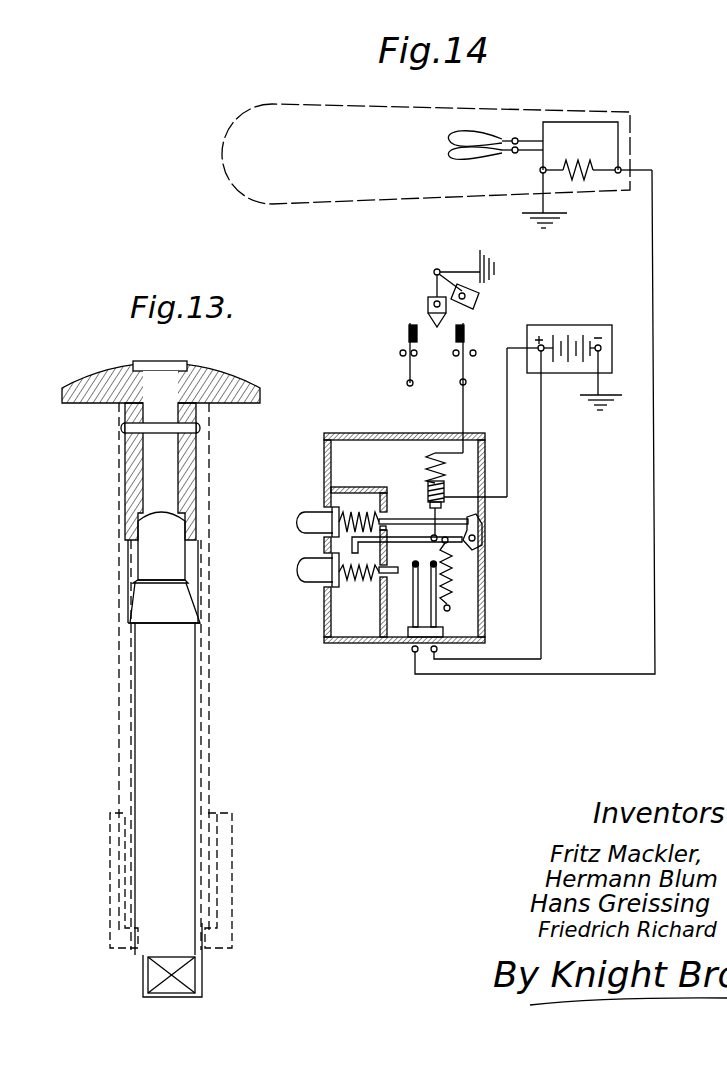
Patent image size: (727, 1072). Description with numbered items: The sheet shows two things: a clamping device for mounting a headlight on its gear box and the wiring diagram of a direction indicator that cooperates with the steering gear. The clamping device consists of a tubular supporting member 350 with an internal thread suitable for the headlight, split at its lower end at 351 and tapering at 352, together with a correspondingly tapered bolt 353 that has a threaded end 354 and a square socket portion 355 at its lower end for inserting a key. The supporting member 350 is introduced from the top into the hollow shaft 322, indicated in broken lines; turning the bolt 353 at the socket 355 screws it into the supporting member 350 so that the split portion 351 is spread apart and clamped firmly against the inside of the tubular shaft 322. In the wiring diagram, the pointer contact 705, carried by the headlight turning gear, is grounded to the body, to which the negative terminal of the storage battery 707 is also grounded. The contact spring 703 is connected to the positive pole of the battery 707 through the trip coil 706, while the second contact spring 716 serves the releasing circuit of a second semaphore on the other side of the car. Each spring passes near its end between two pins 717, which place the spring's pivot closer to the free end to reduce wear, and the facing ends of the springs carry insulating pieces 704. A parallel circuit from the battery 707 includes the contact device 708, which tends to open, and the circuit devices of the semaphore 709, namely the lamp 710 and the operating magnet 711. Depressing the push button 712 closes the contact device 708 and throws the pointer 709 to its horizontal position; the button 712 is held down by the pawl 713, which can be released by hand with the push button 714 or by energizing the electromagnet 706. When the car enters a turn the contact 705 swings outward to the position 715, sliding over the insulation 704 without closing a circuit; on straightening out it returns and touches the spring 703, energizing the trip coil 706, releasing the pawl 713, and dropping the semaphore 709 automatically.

In FIG. 13, the tubular supporting member 350 is at (240, 363).
In FIG. 13, the split lower end 351 is at (128, 594).
In FIG. 13, the tapering portion 352 is at (136, 611).
In FIG. 13, the bolt 353 is at (158, 756).
In FIG. 13, the threaded end 354 is at (158, 562).
In FIG. 13, the square socket portion 355 is at (158, 978).
In FIG. 13, the hollow shaft 322 is at (121, 722).
In FIG. 14, the direction pointer 709 is at (393, 111).
In FIG. 14, the lamp 710 is at (460, 158).
In FIG. 14, the operating magnet 711 is at (590, 158).
In FIG. 14, the pointer contact 705 is at (430, 297).
In FIG. 14, the outward position of the contact 715 is at (478, 296).
In FIG. 14, the contact spring 716 is at (408, 364).
In FIG. 14, the contact spring 703 is at (465, 328).
In FIG. 14, the pins 717 is at (474, 356).
In FIG. 14, the insulating pieces 704 is at (455, 328).
In FIG. 14, the storage battery 707 is at (577, 325).
In FIG. 14, the trip coil 706 is at (428, 462).
In FIG. 14, the push button 714 is at (304, 520).
In FIG. 14, the push button 712 is at (312, 583).
In FIG. 14, the pawl 713 is at (420, 545).
In FIG. 14, the contact device 708 is at (410, 634).